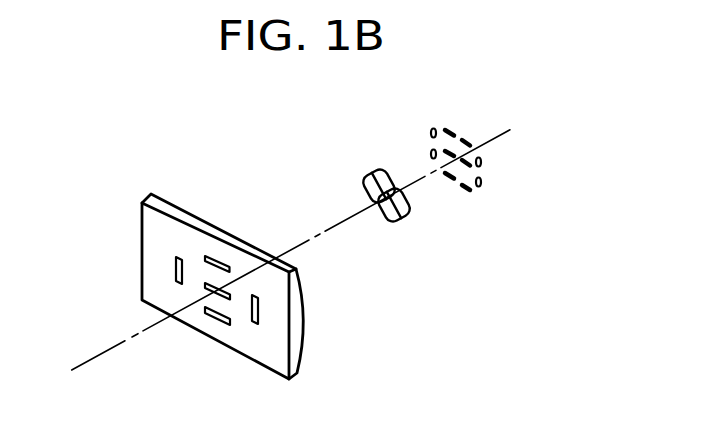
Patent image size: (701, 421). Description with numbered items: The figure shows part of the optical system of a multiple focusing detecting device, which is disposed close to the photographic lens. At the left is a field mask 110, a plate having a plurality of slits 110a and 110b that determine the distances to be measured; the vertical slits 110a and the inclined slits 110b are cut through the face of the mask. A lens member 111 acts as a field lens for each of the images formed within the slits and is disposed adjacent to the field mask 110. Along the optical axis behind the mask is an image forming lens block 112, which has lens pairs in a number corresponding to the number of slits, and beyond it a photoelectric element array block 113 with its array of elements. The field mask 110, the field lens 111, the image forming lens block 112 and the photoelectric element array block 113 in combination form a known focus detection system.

The field mask 110 is at (248, 343).
The slit 110a is at (182, 266).
The slit 110b is at (224, 263).
The lens member 111 is at (297, 350).
The image forming lens block 112 is at (405, 213).
The photoelectric element array block 113 is at (478, 188).